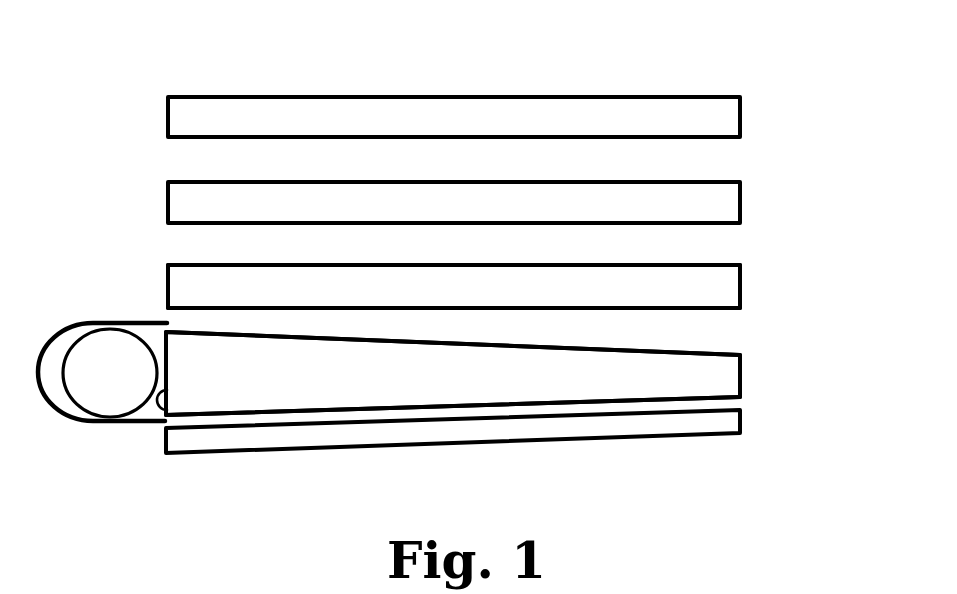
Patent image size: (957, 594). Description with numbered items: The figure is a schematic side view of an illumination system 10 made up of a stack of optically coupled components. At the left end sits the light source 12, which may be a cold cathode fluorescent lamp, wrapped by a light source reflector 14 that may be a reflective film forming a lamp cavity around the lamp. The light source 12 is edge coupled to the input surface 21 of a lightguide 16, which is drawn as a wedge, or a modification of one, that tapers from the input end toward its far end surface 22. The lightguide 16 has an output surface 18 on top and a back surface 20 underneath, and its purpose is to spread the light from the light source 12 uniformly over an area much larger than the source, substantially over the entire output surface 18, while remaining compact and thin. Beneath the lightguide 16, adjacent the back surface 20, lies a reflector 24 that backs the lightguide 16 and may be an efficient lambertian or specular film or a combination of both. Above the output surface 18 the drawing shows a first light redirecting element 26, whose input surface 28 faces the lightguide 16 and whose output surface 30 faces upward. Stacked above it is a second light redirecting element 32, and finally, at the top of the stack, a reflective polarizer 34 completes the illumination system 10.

The illumination system 10 is at (695, 43).
The light source 12 is at (117, 402).
The light source reflector 14 is at (53, 407).
The lightguide 16 is at (548, 385).
The output surface 18 is at (700, 352).
The back surface 20 is at (685, 398).
The input surface 21 is at (165, 392).
The end surface 22 is at (740, 372).
The reflector 24 is at (403, 445).
The first light redirecting element 26 is at (720, 290).
The input surface 28 is at (710, 310).
The output surface 30 is at (703, 268).
The second light redirecting element 32 is at (720, 207).
The reflective polarizer 34 is at (720, 118).